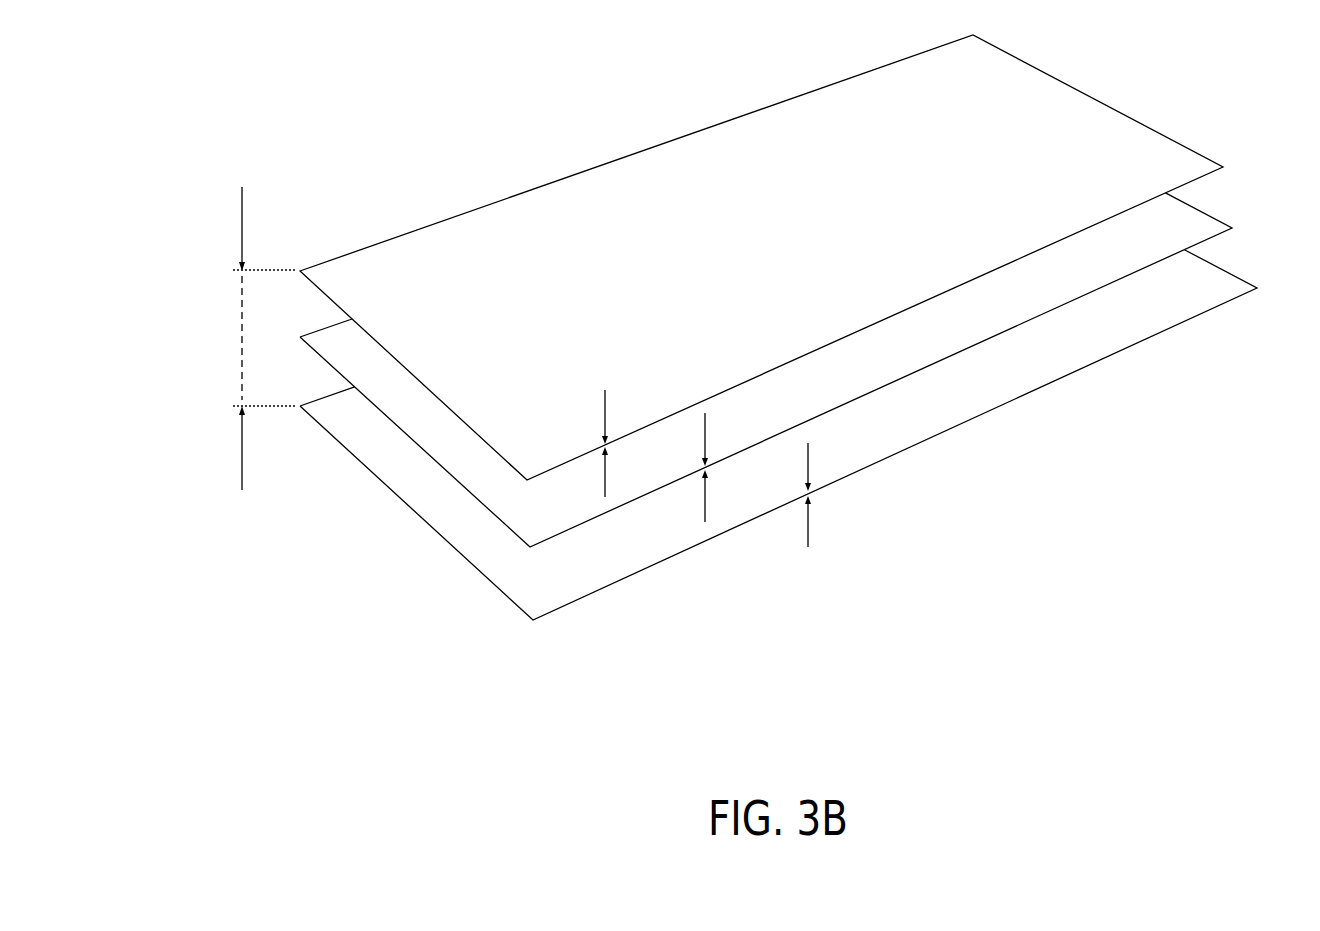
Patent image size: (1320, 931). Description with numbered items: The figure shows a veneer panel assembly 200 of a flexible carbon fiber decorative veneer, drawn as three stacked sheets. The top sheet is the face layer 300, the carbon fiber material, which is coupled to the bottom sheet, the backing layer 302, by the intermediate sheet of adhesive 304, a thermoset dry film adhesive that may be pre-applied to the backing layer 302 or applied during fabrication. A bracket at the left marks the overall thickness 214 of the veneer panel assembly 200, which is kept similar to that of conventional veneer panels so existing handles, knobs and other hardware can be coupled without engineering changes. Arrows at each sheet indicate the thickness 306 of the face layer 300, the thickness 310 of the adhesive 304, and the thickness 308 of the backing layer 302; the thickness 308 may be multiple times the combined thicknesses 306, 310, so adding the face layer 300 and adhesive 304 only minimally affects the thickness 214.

The veneer panel assembly 200 is at (283, 73).
The face layer 300 is at (640, 152).
The adhesive 304 is at (1210, 212).
The backing layer 302 is at (1208, 283).
The thickness 214 is at (225, 268).
The thickness of the face layer 306 is at (605, 478).
The thickness of the adhesive 310 is at (705, 502).
The thickness of the backing layer 308 is at (808, 528).